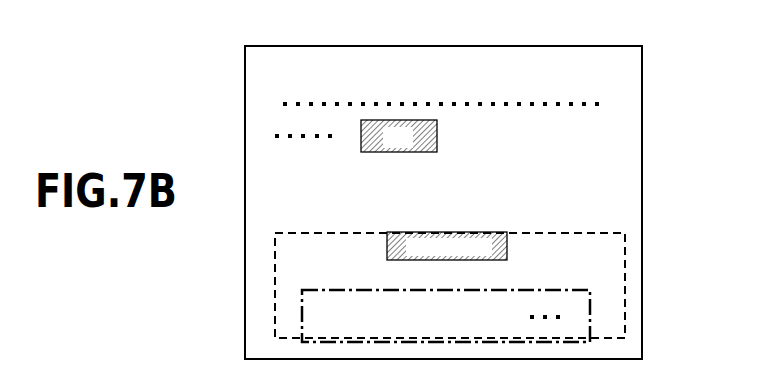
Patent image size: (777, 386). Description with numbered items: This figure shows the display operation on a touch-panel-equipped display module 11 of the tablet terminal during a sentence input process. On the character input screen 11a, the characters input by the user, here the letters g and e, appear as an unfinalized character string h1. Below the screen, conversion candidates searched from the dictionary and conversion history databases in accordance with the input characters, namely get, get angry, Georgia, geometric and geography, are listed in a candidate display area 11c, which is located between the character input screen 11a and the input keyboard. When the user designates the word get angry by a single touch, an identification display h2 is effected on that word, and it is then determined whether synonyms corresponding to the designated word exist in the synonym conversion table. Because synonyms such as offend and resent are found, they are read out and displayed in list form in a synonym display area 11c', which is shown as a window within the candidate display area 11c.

The touch-panel-equipped display module 11 is at (642, 93).
The character input screen 11a is at (612, 173).
The candidate display area 11c is at (505, 277).
The synonym display area 11c' is at (519, 319).
The unfinalized character string h1 is at (421, 120).
The identification display h2 is at (497, 232).